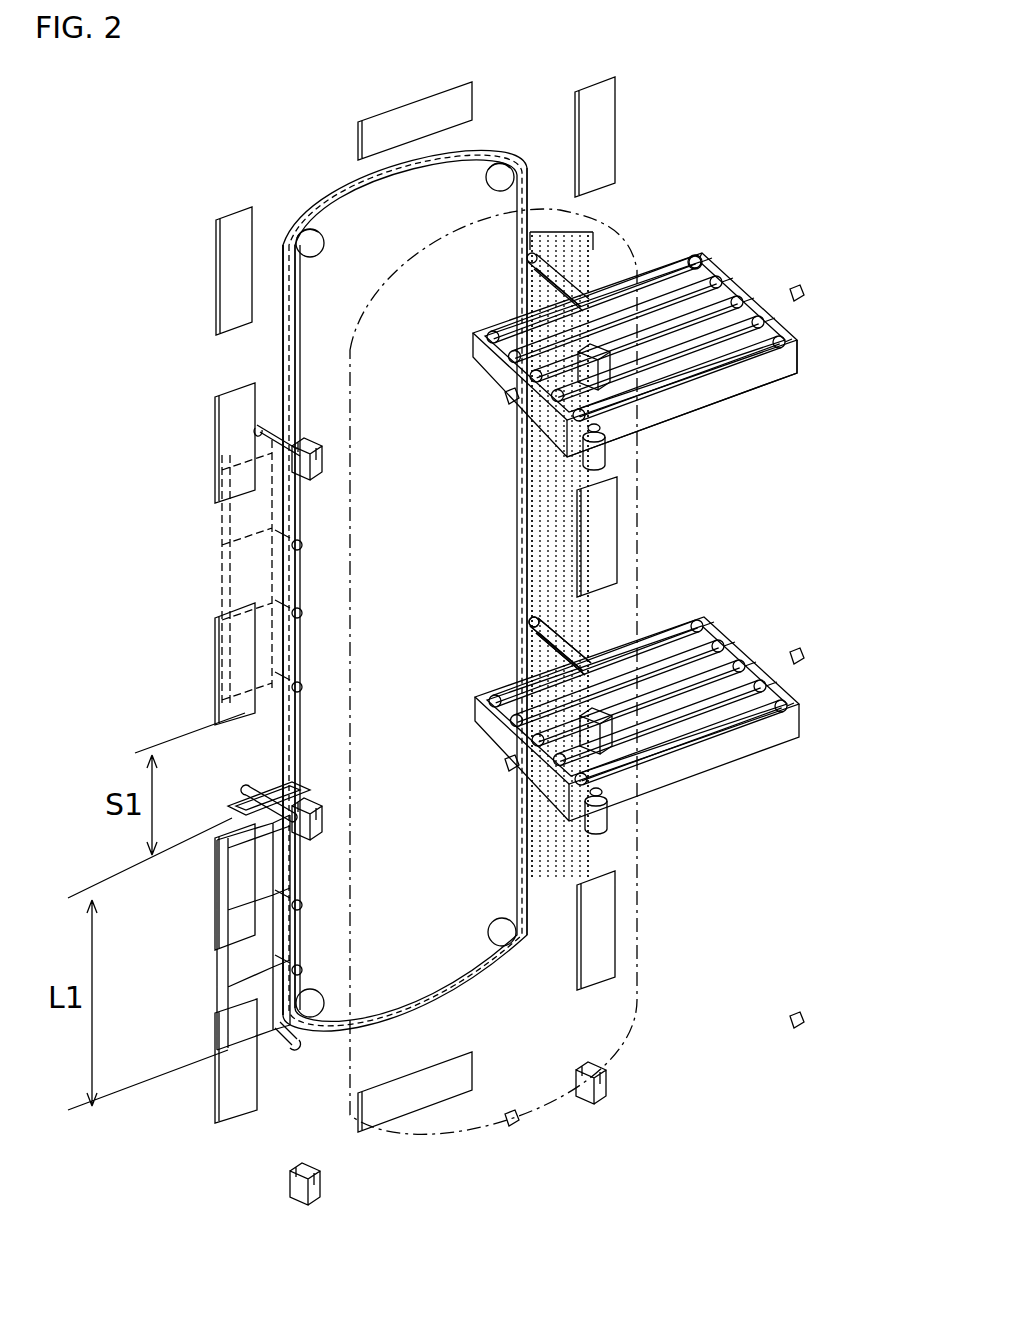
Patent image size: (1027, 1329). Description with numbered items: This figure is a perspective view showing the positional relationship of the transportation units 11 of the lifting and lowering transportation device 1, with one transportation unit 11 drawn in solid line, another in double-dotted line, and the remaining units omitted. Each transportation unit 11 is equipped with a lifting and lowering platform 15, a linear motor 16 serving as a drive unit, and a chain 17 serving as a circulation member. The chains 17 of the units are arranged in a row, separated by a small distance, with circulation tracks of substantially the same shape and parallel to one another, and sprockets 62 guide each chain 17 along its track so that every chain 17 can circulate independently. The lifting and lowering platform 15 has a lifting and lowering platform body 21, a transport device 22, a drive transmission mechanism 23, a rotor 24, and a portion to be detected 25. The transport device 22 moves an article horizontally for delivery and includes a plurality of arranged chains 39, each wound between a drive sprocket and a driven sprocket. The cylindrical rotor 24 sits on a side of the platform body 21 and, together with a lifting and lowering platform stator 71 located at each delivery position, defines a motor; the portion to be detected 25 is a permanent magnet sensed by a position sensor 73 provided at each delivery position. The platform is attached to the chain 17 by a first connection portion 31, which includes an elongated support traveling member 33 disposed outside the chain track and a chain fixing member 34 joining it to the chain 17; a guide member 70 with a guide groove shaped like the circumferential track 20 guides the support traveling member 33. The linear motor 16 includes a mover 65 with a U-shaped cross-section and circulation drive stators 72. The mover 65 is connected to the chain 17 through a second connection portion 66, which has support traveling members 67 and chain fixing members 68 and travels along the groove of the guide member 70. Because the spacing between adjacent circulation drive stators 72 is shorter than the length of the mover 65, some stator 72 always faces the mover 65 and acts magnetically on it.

The lifting and lowering transportation device 1 is at (762, 129).
The transportation unit 11 is at (289, 180).
The lifting and lowering platform 15 is at (610, 510).
The linear motor 16 is at (208, 748).
The chain 17 is at (297, 385).
The circumferential track 20 is at (645, 545).
The lifting and lowering platform body 21 is at (480, 372).
The transport device 22 is at (650, 275).
The drive transmission mechanism 23 is at (603, 385).
The rotor 24 is at (580, 470).
The portion to be detected 25 is at (797, 375).
The first connection portion 31 is at (558, 245).
The support traveling member 33 is at (548, 290).
The chain fixing member 34 is at (530, 260).
The chain 39 is at (700, 262).
The sprocket 62 is at (296, 240).
The mover 65 is at (202, 553).
The second connection portion 66 is at (332, 557).
The support traveling member 67 is at (278, 445).
The chain fixing member 68 is at (278, 795).
The guide member 70 is at (518, 531).
The lifting and lowering platform stator 71 is at (325, 465).
The circulation drive stator 72 is at (455, 105).
The position sensor 73 is at (798, 288).